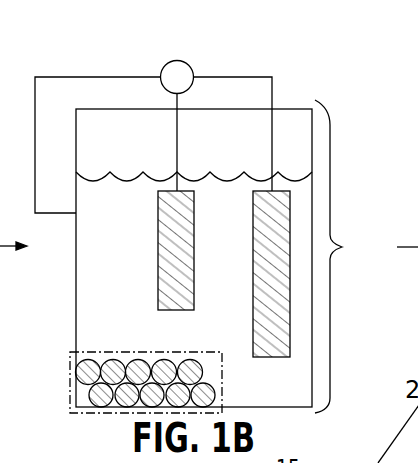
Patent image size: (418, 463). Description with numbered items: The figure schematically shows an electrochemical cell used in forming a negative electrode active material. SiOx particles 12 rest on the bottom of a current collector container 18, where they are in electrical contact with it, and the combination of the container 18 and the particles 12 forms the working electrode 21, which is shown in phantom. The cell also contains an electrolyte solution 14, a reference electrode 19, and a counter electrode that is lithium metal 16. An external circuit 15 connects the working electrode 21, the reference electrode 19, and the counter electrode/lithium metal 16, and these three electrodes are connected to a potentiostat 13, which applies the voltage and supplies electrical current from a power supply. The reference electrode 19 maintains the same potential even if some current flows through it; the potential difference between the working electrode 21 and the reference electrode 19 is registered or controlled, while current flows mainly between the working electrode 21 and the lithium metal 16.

The SiOx particles 12 is at (90, 352).
The potentiostat 13 is at (176, 60).
The electrolyte solution 14 is at (283, 390).
The external circuit 15 is at (233, 77).
The lithium metal 16 is at (289, 320).
The current collector container 18 is at (344, 256).
The reference electrode 19 is at (158, 265).
The working electrode 21 is at (95, 413).